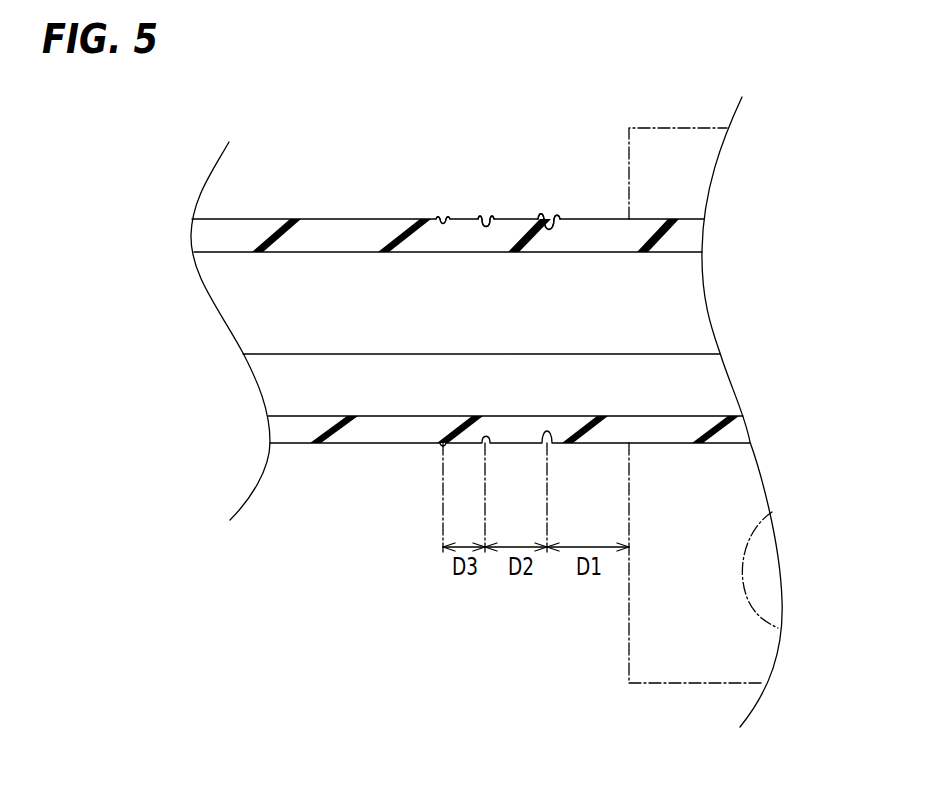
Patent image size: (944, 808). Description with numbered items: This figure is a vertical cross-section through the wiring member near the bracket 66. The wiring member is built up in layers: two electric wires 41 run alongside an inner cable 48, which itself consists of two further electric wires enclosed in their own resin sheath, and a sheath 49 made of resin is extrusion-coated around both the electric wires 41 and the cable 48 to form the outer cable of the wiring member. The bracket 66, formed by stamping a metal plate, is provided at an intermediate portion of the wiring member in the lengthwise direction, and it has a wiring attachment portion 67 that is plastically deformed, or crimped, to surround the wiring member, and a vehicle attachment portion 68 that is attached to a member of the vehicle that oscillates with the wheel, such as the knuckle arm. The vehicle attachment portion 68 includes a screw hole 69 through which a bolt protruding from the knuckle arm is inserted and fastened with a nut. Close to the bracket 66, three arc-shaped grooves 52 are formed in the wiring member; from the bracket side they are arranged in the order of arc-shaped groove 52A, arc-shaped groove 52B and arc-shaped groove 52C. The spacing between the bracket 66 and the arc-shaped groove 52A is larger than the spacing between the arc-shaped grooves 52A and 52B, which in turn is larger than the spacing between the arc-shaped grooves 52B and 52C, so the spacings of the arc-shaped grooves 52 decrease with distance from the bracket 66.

The electric wire 41 is at (713, 383).
The cable 48 is at (697, 310).
The sheath 49 is at (687, 236).
The arc-shaped groove 52 is at (498, 176).
The arc-shaped groove 52A is at (549, 222).
The arc-shaped groove 52B is at (485, 219).
The arc-shaped groove 52C is at (442, 219).
The bracket 66 is at (626, 645).
The wiring attachment portion 67 is at (676, 128).
The vehicle attachment portion 68 is at (677, 683).
The screw hole 69 is at (760, 610).